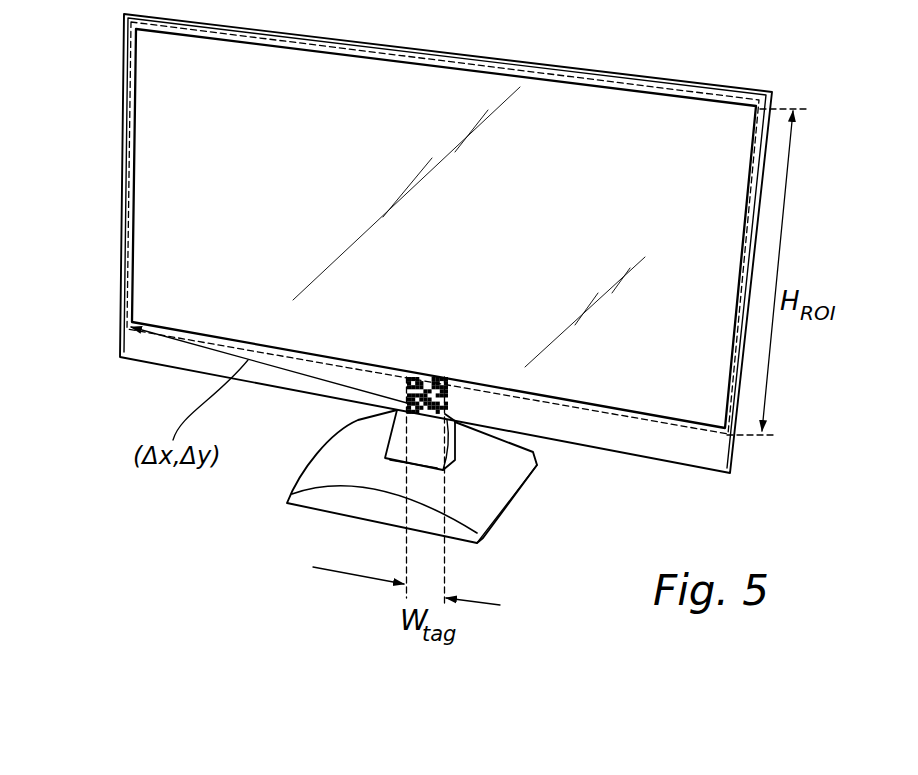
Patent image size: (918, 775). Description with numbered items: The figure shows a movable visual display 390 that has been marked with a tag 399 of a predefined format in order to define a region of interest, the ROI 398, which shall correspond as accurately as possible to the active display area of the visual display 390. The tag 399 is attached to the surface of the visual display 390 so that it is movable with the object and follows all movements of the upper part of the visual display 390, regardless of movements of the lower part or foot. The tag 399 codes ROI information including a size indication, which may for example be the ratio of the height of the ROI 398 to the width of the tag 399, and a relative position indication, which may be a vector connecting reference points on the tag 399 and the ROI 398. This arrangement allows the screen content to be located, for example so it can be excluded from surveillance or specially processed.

The visual display 390 is at (650, 458).
The ROI 398 is at (127, 152).
The tag 399 is at (447, 392).